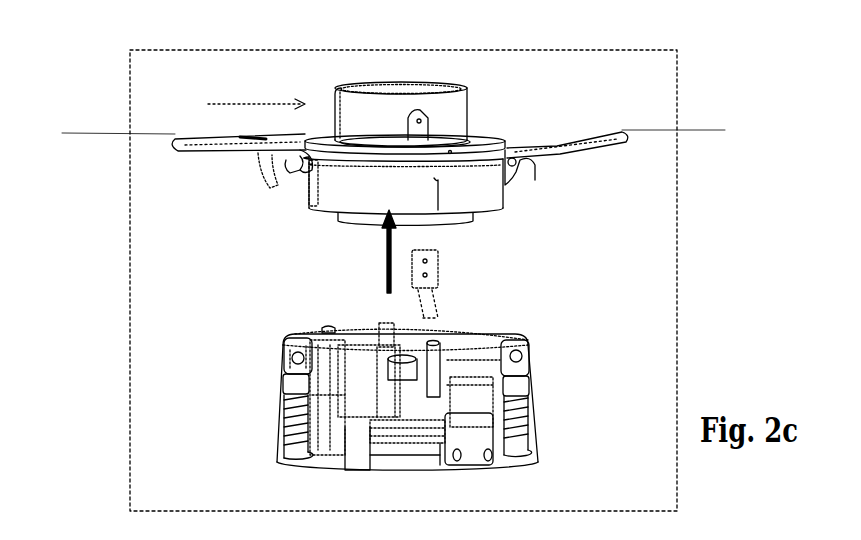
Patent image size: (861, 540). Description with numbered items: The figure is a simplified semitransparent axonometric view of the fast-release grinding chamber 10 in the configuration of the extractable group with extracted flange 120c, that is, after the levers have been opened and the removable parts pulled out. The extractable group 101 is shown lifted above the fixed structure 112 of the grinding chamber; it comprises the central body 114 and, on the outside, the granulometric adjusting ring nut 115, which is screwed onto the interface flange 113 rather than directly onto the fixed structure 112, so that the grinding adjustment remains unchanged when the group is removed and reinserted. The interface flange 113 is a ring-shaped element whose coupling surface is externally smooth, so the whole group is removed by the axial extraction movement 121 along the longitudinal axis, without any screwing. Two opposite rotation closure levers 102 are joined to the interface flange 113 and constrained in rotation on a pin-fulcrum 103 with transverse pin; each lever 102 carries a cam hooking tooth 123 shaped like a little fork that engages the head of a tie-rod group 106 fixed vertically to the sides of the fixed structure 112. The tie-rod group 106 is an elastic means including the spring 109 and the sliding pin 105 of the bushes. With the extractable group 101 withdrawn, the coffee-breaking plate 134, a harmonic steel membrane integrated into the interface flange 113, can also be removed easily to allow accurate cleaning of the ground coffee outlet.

The grinding chamber 10 is at (678, 50).
The extractable group 101 is at (533, 108).
The rotation closure lever 102 is at (403, 130).
The pin-fulcrum for lever 103 is at (297, 166).
The sliding pin of the bushes 105 is at (303, 323).
The tie-rod group 106 is at (286, 348).
The spring of the tie-rod group 109 is at (283, 375).
The fixed structure of the grinding chamber 112 is at (433, 308).
The interface flange 113 is at (478, 176).
The central body of the extractable group 114 is at (448, 102).
The granulometric adjusting ring nut 115 is at (508, 152).
The configuration of the extractable group with extracted flange 120c is at (231, 103).
The axial extraction movement 121 is at (380, 246).
The cam hooking tooth 123 is at (272, 168).
The extractable coffee-breaking plate 134 is at (440, 243).